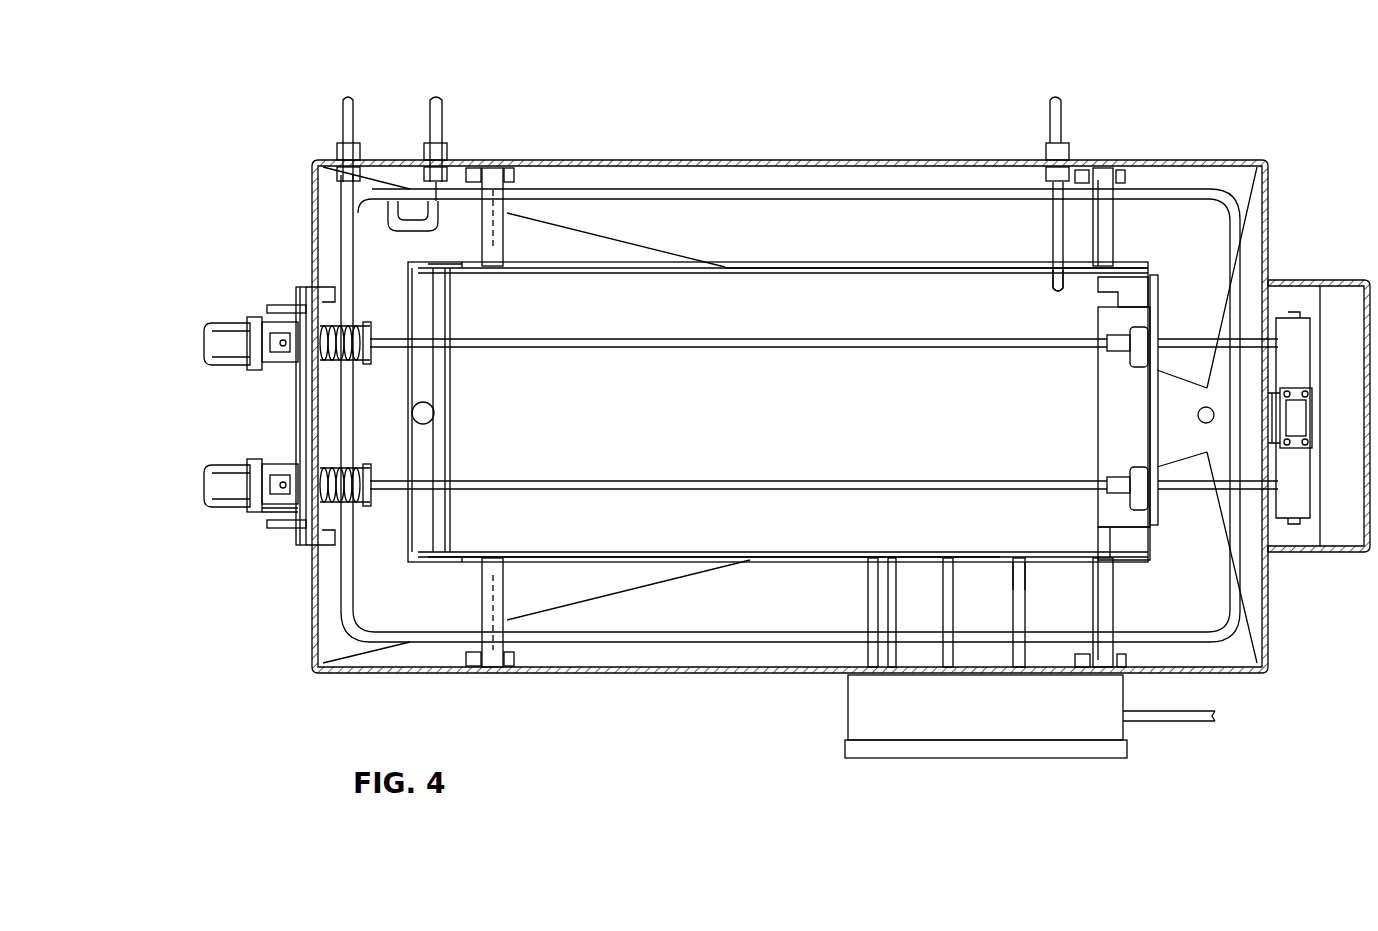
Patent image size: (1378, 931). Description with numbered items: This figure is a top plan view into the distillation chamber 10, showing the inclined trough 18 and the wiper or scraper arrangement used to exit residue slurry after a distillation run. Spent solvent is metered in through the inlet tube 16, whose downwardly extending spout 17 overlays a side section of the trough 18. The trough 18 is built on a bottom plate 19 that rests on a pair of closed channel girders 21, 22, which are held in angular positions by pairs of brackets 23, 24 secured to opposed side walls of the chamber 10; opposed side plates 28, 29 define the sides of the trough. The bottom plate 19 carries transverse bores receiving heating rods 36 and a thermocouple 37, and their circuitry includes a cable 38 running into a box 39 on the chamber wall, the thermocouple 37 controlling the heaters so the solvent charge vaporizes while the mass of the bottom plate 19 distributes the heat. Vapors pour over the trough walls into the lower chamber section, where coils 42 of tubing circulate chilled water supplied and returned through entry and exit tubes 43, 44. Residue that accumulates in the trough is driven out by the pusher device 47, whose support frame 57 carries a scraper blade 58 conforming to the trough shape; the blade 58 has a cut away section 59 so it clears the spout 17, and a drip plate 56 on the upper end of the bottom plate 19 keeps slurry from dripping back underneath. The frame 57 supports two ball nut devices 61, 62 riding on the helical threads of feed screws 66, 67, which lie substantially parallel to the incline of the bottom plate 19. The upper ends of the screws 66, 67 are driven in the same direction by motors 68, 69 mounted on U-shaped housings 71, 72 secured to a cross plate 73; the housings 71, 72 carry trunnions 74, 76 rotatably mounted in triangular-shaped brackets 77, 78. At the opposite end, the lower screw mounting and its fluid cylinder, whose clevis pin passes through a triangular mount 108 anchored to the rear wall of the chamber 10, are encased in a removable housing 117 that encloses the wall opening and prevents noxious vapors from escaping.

The chamber 10 is at (836, 165).
The inlet tube 16 is at (1053, 226).
The spout 17 is at (1057, 290).
The trough 18 is at (786, 562).
The bottom plate 19 is at (922, 282).
The closed channel girder 21 is at (503, 243).
The closed channel girder 22 is at (1110, 224).
The brackets 23 is at (515, 170).
The brackets 24 is at (1126, 170).
The side plate 28 is at (790, 270).
The side plate 29 is at (573, 560).
The heating rods 36 is at (868, 603).
The thermocouple 37 is at (896, 605).
The cable 38 is at (1190, 722).
The box 39 is at (848, 713).
The coils 42 is at (716, 198).
The entry tube 43 is at (342, 103).
The exit tube 44 is at (430, 103).
The pusher device 47 is at (1160, 308).
The drip plate 56 is at (438, 300).
The support frame 57 is at (1156, 512).
The scraper blade 58 is at (1100, 535).
The cut away section 59 is at (1150, 276).
The ball nut device 61 is at (1125, 478).
The ball nut device 62 is at (1112, 350).
The feed screw 66 is at (660, 482).
The feed screw 67 is at (592, 340).
The motor 68 is at (225, 463).
The motor 69 is at (223, 320).
The U-shaped housing 71 is at (268, 462).
The U-shaped housing 72 is at (252, 318).
The cross plate 73 is at (294, 395).
The trunnion 74 is at (268, 515).
The trunnion 76 is at (274, 317).
The triangular-shaped bracket 77 is at (292, 525).
The triangular-shaped bracket 78 is at (293, 303).
The triangular mount 108 is at (1300, 410).
The removable housing 117 is at (1325, 282).